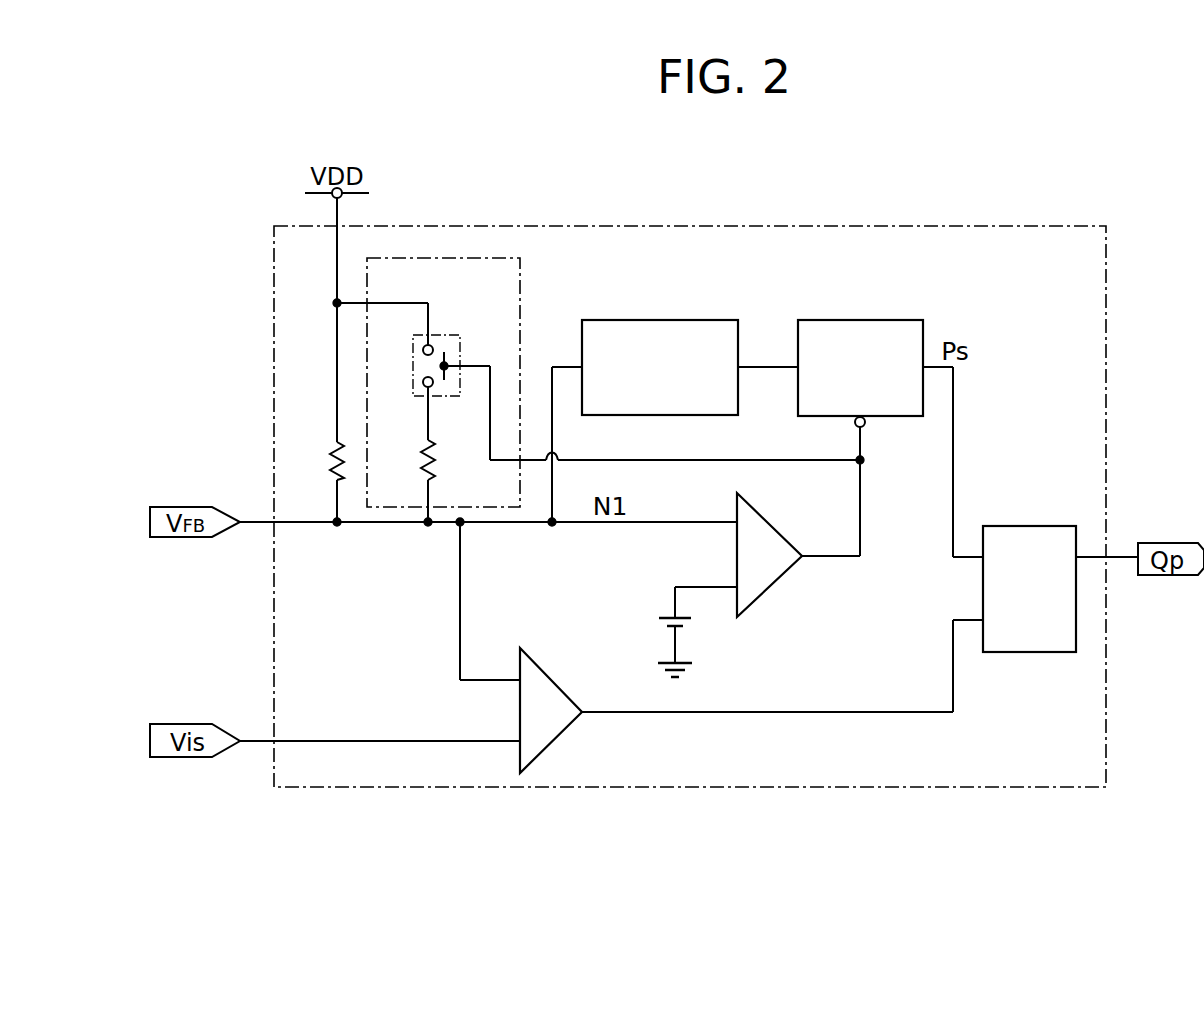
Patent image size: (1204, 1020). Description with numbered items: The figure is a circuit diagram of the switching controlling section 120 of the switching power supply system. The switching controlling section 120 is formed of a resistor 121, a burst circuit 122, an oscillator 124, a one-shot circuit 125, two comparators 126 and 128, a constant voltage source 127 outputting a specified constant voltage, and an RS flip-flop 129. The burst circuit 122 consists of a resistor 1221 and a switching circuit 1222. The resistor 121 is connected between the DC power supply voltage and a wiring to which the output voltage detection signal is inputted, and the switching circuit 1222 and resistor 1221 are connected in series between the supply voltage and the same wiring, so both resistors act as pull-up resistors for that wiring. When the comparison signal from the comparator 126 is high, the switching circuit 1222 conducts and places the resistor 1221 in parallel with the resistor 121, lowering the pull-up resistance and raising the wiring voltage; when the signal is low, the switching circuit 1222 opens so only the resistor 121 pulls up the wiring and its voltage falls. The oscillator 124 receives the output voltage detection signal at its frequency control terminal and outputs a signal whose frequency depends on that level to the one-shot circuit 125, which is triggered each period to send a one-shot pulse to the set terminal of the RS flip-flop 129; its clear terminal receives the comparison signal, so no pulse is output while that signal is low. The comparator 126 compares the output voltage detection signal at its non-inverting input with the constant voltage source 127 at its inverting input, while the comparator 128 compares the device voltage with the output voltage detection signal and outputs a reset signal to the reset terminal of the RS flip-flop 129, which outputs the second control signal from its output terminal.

The switching controlling section 120 is at (648, 226).
The resistor 121 is at (332, 468).
The burst circuit 122 is at (520, 262).
The resistor 1221 is at (422, 468).
The switching circuit 1222 is at (462, 335).
The oscillator 124 is at (665, 320).
The one-shot circuit 125 is at (860, 320).
The comparator 126 is at (737, 555).
The constant voltage source 127 is at (658, 618).
The comparator 128 is at (520, 708).
The RS flip-flop 129 is at (1033, 526).